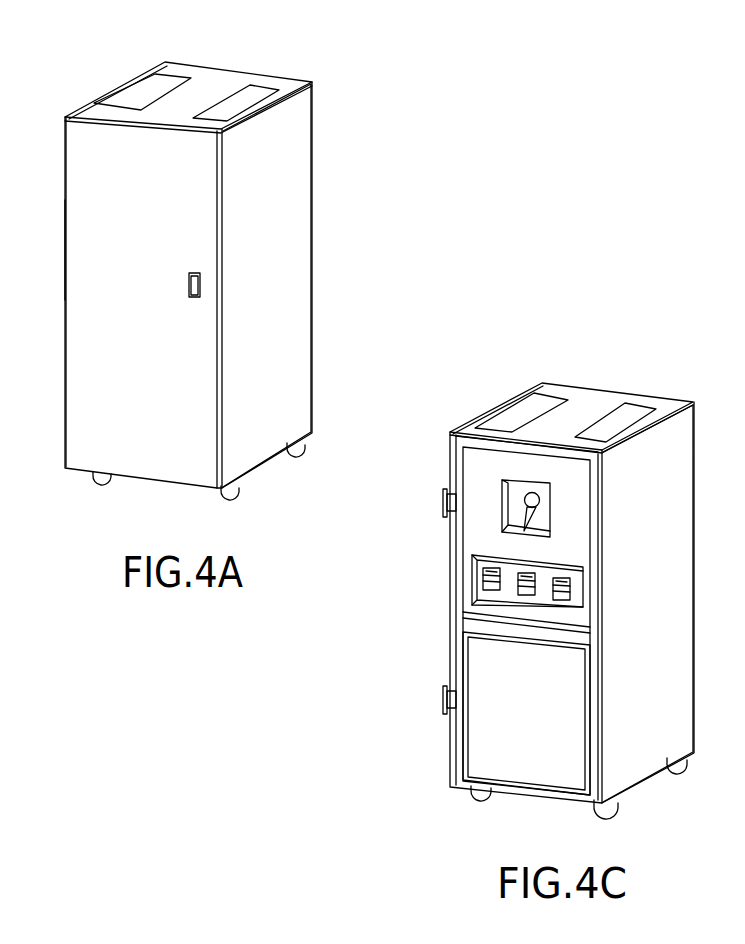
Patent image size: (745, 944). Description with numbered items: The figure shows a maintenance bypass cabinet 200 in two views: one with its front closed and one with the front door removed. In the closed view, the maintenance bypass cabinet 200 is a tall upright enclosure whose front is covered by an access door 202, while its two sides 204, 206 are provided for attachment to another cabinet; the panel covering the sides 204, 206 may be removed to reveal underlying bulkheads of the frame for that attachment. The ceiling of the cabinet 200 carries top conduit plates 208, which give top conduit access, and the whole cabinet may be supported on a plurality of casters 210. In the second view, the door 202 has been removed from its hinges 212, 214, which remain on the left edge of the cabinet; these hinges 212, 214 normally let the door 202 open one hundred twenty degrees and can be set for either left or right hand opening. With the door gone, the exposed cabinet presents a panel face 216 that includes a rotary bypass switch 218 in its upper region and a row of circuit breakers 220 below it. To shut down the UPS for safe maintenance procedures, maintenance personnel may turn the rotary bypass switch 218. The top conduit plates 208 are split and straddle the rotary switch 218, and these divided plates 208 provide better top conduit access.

In FIG. 4A, the maintenance bypass cabinet 200 is at (116, 91).
In FIG. 4C, the maintenance bypass cabinet 200 is at (492, 407).
In FIG. 4A, the access door 202 is at (78, 275).
In FIG. 4A, the side 204 is at (300, 233).
In FIG. 4C, the side 204 is at (677, 557).
In FIG. 4A, the side 206 is at (65, 217).
In FIG. 4A, the top conduit plates 208 is at (267, 87).
In FIG. 4C, the top conduit plates 208 is at (650, 405).
In FIG. 4A, the casters 210 is at (227, 490).
In FIG. 4C, the hinge 212 is at (443, 503).
In FIG. 4C, the hinge 214 is at (443, 700).
In FIG. 4C, the panel face 216 is at (507, 678).
In FIG. 4C, the rotary bypass switch 218 is at (502, 492).
In FIG. 4C, the circuit breakers 220 is at (468, 585).